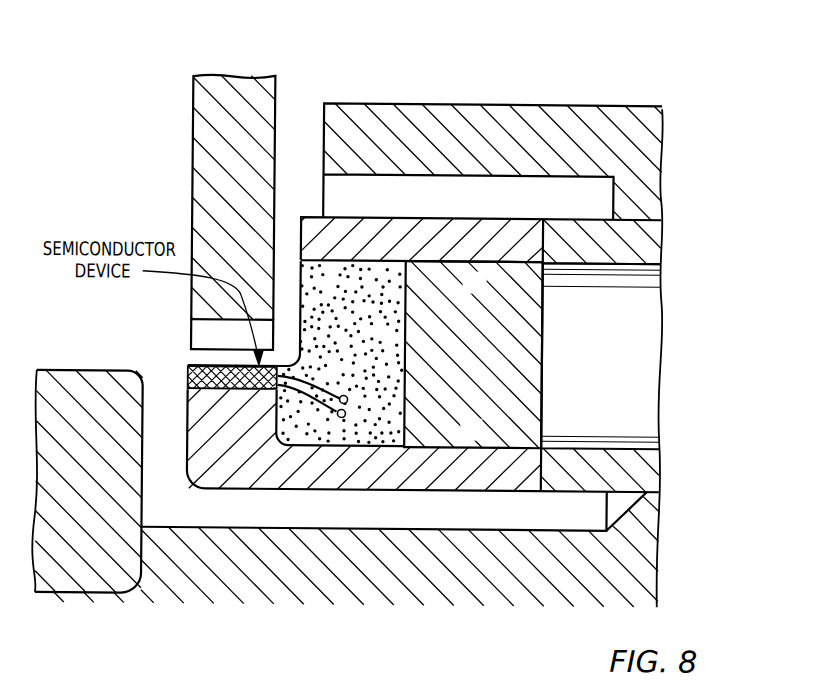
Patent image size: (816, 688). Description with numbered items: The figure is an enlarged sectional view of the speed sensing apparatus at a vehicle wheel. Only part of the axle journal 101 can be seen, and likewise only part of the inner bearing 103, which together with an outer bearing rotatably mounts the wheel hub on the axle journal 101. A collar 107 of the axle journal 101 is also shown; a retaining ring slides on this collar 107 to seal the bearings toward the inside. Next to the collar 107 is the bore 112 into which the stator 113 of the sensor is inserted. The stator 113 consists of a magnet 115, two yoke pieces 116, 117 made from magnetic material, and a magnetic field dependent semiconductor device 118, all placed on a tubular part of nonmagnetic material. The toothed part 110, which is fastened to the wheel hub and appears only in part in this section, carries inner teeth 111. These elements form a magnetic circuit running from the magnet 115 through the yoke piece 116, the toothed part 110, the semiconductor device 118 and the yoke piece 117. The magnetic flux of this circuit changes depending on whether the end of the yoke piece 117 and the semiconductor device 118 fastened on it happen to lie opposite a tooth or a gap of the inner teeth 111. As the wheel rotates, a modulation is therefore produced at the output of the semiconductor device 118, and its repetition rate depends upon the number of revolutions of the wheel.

The axle journal 101 is at (549, 560).
The inner bearing 103 is at (77, 400).
The collar 107 is at (421, 105).
The toothed part 110 is at (215, 160).
The inner teeth 111 is at (210, 332).
The bore 112 is at (453, 512).
The stator 113 is at (578, 300).
The magnet 115 is at (508, 302).
The yoke piece 116 is at (352, 240).
The yoke piece 117 is at (361, 468).
The magnetic field dependent semiconductor device 118 is at (200, 372).